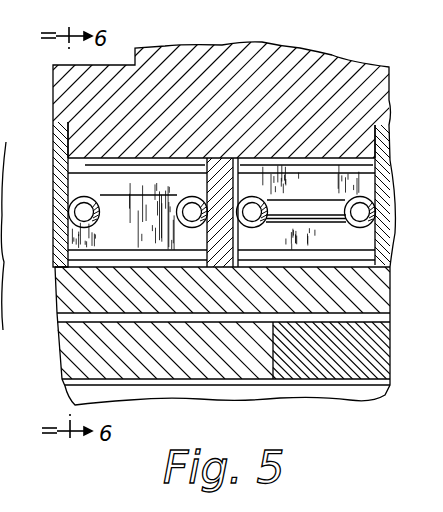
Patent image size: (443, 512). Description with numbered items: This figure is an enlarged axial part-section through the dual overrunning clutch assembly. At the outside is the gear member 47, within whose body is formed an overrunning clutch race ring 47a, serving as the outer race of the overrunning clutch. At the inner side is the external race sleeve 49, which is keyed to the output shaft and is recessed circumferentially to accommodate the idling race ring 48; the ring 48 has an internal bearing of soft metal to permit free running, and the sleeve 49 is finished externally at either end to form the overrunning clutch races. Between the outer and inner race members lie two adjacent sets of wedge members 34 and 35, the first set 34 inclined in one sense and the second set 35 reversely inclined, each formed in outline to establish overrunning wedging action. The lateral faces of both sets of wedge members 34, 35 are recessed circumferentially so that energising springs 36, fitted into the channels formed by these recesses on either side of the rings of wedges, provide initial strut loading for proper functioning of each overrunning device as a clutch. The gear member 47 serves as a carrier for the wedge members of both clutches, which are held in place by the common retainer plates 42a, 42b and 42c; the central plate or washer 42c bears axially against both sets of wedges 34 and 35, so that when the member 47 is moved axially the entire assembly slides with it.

The gear member 47 is at (342, 62).
The overrunning clutch race ring 47a is at (13, 236).
The retainer plate 42a is at (62, 232).
The retainer plate 42b is at (387, 136).
The central plate 42c is at (223, 190).
The wedge members 34 is at (83, 181).
The wedge members 35 is at (364, 180).
The energising springs 36 is at (178, 203).
The idling race ring 48 is at (389, 281).
The external race sleeve 49 is at (388, 358).